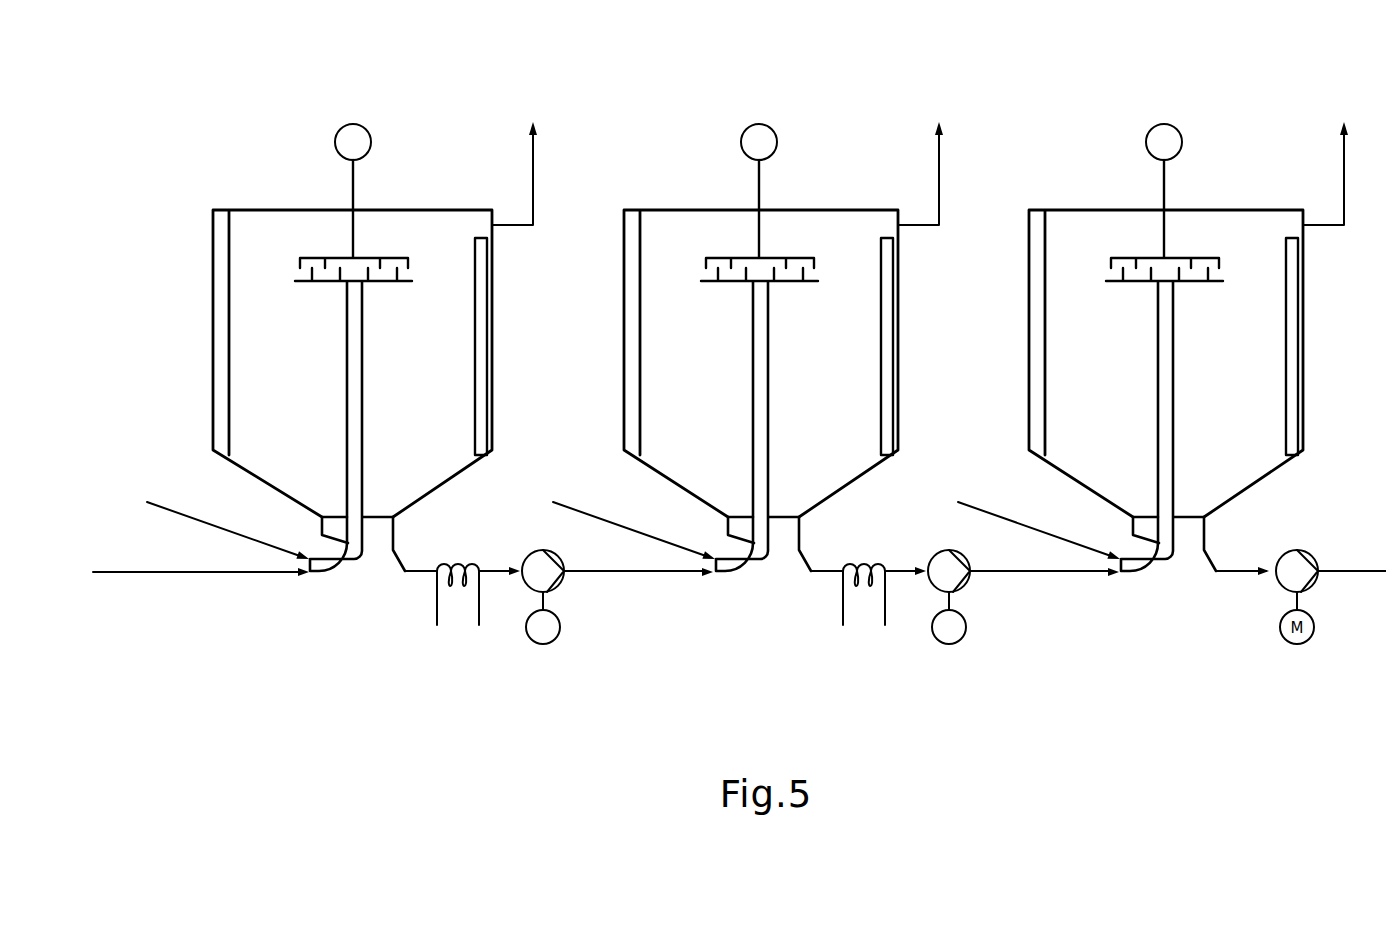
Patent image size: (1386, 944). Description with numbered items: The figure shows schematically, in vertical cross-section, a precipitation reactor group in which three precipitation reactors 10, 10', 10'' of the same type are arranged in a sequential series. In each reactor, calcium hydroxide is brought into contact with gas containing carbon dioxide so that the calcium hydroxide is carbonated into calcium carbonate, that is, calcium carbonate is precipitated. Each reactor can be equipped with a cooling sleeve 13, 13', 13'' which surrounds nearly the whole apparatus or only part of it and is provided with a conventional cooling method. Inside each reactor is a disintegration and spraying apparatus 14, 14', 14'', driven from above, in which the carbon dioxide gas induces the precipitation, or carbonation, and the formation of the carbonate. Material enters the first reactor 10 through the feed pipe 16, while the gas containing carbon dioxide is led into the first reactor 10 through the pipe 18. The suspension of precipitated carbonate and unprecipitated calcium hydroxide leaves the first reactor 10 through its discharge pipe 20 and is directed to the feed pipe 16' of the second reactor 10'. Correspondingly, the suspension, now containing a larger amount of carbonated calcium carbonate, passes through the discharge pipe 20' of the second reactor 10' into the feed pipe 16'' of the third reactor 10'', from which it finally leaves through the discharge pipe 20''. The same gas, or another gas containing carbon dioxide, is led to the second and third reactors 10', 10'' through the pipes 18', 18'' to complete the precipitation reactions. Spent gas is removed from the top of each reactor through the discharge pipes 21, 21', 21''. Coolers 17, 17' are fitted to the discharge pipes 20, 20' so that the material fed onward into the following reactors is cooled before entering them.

The precipitation reactor 10 is at (352, 327).
The second precipitation reactor 10' is at (761, 327).
The third precipitation reactor 10'' is at (1167, 327).
The cooling sleeve 13 is at (508, 346).
The cooling sleeve 13' is at (916, 346).
The cooling sleeve 13'' is at (1324, 346).
The disintegration and spraying apparatus 14 is at (376, 236).
The disintegration and spraying apparatus 14' is at (785, 236).
The disintegration and spraying apparatus 14'' is at (1192, 236).
The feed pipe 16 is at (199, 546).
The feed pipe 16' is at (596, 580).
The feed pipe 16'' is at (1002, 580).
The cooler 17 is at (458, 600).
The cooler 17' is at (864, 600).
The feed pipe for gas 18 is at (228, 515).
The gas pipe 18' is at (634, 515).
The gas pipe 18'' is at (1039, 515).
The discharge pipe 20 is at (391, 544).
The discharge pipe 20' is at (799, 544).
The discharge pipe 20'' is at (1207, 544).
The gas discharge pipe 21 is at (523, 205).
The gas discharge pipe 21' is at (932, 205).
The gas discharge pipe 21'' is at (1339, 205).